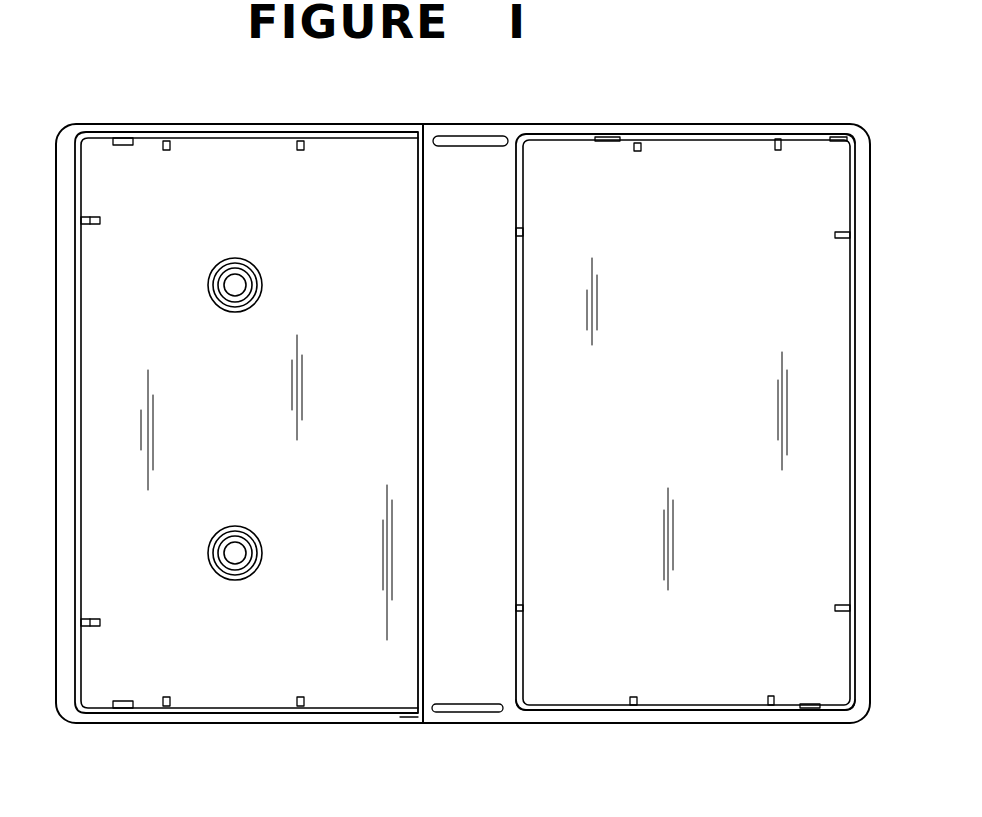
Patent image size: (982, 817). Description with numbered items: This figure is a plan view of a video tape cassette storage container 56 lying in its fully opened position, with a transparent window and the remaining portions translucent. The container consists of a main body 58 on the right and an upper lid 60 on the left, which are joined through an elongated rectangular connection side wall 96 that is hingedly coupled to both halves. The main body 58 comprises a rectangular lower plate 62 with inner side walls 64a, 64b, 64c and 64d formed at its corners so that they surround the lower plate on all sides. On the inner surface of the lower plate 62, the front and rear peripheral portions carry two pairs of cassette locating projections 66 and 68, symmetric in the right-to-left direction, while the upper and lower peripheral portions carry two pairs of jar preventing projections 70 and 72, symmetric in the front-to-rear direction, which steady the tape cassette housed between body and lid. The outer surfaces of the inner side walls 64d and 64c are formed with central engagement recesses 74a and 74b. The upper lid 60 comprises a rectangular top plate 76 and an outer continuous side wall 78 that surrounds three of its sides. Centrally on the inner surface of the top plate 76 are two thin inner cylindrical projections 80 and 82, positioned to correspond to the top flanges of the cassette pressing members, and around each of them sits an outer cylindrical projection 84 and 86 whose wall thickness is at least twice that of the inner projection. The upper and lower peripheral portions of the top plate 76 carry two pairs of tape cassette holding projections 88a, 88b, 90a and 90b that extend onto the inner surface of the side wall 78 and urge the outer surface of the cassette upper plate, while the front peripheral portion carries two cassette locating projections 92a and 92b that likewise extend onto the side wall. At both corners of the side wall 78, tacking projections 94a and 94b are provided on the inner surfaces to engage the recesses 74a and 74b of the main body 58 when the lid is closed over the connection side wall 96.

The video tape cassette storage container 56 is at (496, 96).
The main body 58 is at (656, 122).
The upper lid 60 is at (293, 122).
The lower plate 62 is at (680, 684).
The inner side wall 64a is at (548, 715).
The inner side wall 64b is at (528, 134).
The inner side wall 64c is at (860, 128).
The inner side wall 64d is at (850, 712).
The cassette locating projection 66 is at (835, 235).
The cassette locating projection 68 is at (524, 233).
The jar preventing projection 70 is at (632, 697).
The jar preventing projection 72 is at (637, 152).
The engagement recess 74a is at (805, 712).
The engagement recess 74b is at (800, 135).
The top plate 76 is at (245, 684).
The outer continuous side wall 78 is at (214, 132).
The inner cylindrical projection 80 is at (246, 555).
The inner cylindrical projection 82 is at (246, 283).
The outer cylindrical projection 84 is at (235, 527).
The outer cylindrical projection 86 is at (238, 312).
The tape cassette holding projection 88a is at (167, 697).
The tape cassette holding projection 88b is at (301, 697).
The tape cassette holding projection 90a is at (167, 151).
The tape cassette holding projection 90b is at (301, 151).
The cassette locating projection 92a is at (100, 622).
The cassette locating projection 92b is at (100, 221).
The tacking projection 94a is at (125, 712).
The tacking projection 94b is at (128, 138).
The connection side wall 96 is at (470, 688).